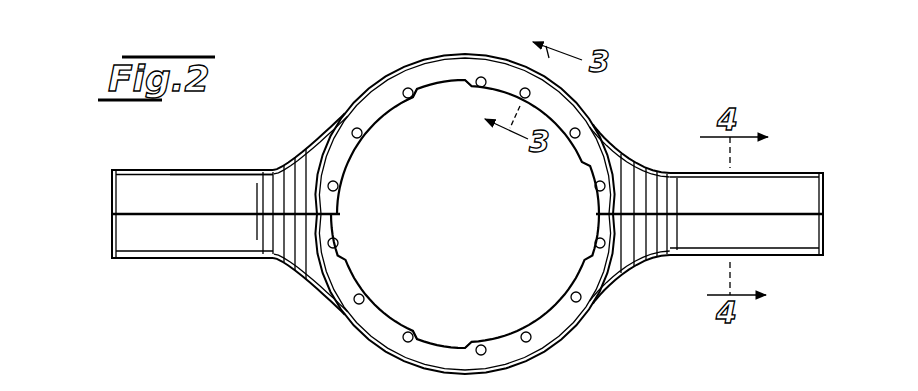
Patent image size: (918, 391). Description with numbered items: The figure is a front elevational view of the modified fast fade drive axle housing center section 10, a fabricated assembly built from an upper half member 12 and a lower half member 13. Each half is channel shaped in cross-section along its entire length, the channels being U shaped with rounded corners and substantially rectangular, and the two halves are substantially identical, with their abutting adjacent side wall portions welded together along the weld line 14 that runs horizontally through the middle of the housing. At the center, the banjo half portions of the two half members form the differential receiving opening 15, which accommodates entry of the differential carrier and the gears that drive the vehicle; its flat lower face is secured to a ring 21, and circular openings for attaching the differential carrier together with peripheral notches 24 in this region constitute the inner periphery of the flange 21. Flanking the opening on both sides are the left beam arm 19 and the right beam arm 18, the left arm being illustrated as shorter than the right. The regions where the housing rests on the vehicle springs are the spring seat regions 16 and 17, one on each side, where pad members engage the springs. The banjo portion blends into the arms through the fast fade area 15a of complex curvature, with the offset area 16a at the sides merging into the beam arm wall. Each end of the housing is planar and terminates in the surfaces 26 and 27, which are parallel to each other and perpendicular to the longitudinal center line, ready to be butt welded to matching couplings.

The axle housing center section 10 is at (352, 82).
The upper half member 12 is at (410, 61).
The lower half member 13 is at (137, 245).
The weld line 14 is at (160, 212).
The differential receiving opening 15 is at (585, 148).
The fast fade area 15a is at (623, 150).
The spring seat region 16 is at (716, 169).
The offset area 16a is at (282, 182).
The spring seat region 17 is at (141, 167).
The right beam arm 18 is at (790, 172).
The left beam arm 19 is at (218, 187).
The ring 21 is at (374, 127).
The peripheral notches 24 is at (432, 88).
The end surface 26 is at (110, 191).
The end surface 27 is at (826, 189).